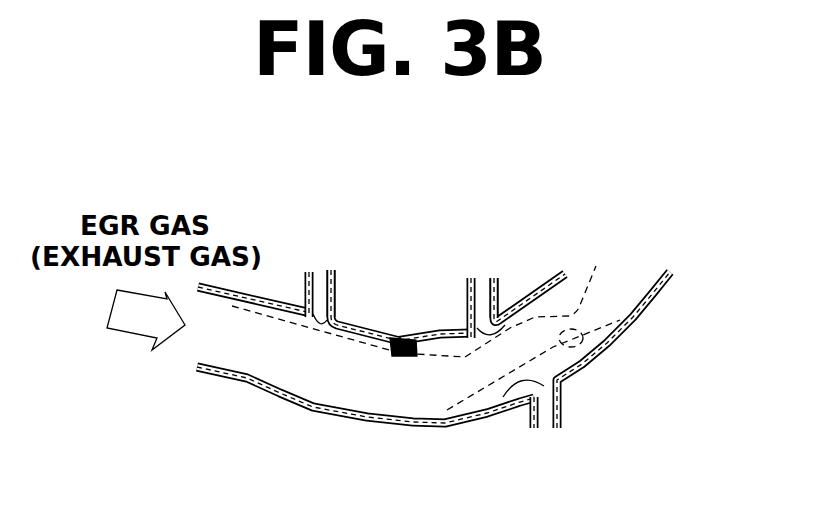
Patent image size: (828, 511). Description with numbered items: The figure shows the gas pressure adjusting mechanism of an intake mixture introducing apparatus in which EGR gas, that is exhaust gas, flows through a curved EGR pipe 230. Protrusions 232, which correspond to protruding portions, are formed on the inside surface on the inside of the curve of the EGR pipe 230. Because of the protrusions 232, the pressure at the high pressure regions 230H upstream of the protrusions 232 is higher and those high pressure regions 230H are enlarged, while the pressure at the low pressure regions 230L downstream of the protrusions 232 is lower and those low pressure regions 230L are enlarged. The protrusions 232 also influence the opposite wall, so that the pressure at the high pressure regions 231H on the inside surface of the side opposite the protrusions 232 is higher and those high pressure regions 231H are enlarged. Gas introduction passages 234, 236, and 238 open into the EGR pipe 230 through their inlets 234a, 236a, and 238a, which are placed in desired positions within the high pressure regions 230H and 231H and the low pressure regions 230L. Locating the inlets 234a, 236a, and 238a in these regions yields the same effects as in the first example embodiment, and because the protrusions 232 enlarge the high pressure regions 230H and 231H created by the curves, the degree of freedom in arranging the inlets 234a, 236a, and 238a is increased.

The EGR pipe 230 is at (250, 384).
The high pressure regions 230H is at (232, 307).
The low pressure regions 230L is at (596, 266).
The high pressure regions 231H is at (583, 352).
The protrusions 232 is at (391, 356).
The gas introduction passage 234 is at (305, 284).
The inlet 234a is at (346, 322).
The gas introduction passage 236 is at (466, 298).
The inlet 236a is at (506, 316).
The gas introduction passage 238 is at (563, 410).
The inlet 238a is at (505, 396).